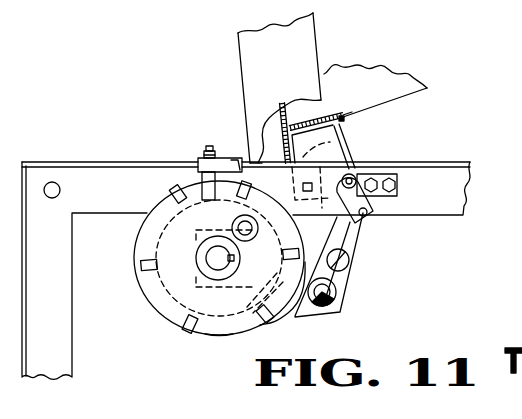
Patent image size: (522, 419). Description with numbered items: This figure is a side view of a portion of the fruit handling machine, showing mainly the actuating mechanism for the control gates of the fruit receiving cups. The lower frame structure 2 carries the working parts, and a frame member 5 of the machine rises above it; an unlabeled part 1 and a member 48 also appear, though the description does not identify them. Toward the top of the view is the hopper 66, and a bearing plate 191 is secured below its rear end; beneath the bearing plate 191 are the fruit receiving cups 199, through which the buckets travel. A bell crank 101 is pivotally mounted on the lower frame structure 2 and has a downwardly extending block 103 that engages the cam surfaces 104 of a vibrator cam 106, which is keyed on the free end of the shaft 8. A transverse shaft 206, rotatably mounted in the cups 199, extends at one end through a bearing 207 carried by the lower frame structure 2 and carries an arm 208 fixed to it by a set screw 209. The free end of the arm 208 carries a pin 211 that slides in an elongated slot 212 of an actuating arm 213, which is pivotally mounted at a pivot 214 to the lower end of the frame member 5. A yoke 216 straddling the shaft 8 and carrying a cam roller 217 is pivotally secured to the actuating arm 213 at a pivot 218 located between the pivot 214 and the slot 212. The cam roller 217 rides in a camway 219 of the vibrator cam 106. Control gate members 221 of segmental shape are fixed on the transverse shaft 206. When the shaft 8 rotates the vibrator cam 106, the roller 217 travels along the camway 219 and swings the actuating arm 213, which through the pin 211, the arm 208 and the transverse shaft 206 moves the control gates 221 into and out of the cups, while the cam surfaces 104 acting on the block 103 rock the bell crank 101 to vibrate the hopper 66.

The frame bar 1 is at (104, 162).
The lower frame structure 2 is at (70, 353).
The frame member 5 is at (302, 51).
The shaft 8 is at (207, 256).
The upright member 48 is at (261, 122).
The hopper 66 is at (399, 81).
The bell crank 101 is at (237, 154).
The block 103 is at (200, 173).
The cam surfaces 104 is at (173, 203).
The vibrator cam 106 is at (158, 314).
The bearing plate 191 is at (346, 117).
The fruit receiving cups 199 is at (345, 127).
The transverse shaft 206 is at (354, 168).
The bearing 207 is at (383, 182).
The arm 208 is at (375, 200).
The set screw 209 is at (341, 184).
The pin 211 is at (365, 223).
The elongated slot 212 is at (349, 258).
The actuating arm 213 is at (352, 268).
The pivot 214 is at (340, 312).
The yoke 216 is at (264, 323).
The cam roller 217 is at (220, 333).
The pivot 218 is at (336, 290).
The camway 219 is at (150, 226).
The control gate members 221 is at (388, 128).